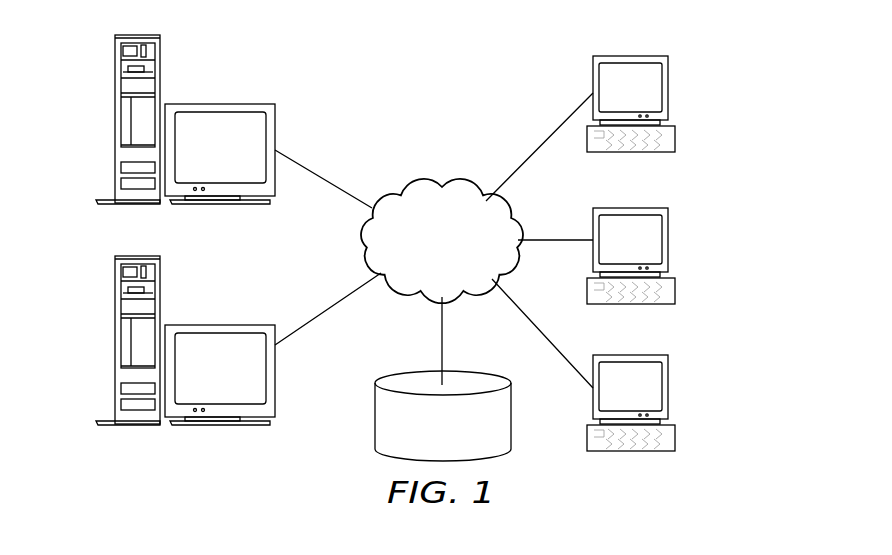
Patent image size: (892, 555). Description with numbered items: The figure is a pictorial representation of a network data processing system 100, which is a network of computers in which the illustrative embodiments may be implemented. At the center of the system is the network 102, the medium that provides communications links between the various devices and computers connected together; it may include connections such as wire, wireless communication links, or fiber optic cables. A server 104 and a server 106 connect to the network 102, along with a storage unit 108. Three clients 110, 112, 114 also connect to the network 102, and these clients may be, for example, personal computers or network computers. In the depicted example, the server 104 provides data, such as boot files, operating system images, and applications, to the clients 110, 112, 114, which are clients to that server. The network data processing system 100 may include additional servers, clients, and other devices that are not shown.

The network data processing system 100 is at (497, 74).
The network 102 is at (410, 190).
The server 104 is at (115, 121).
The server 106 is at (115, 341).
The storage unit 108 is at (375, 428).
The client 110 is at (668, 88).
The client 112 is at (668, 241).
The client 114 is at (668, 388).